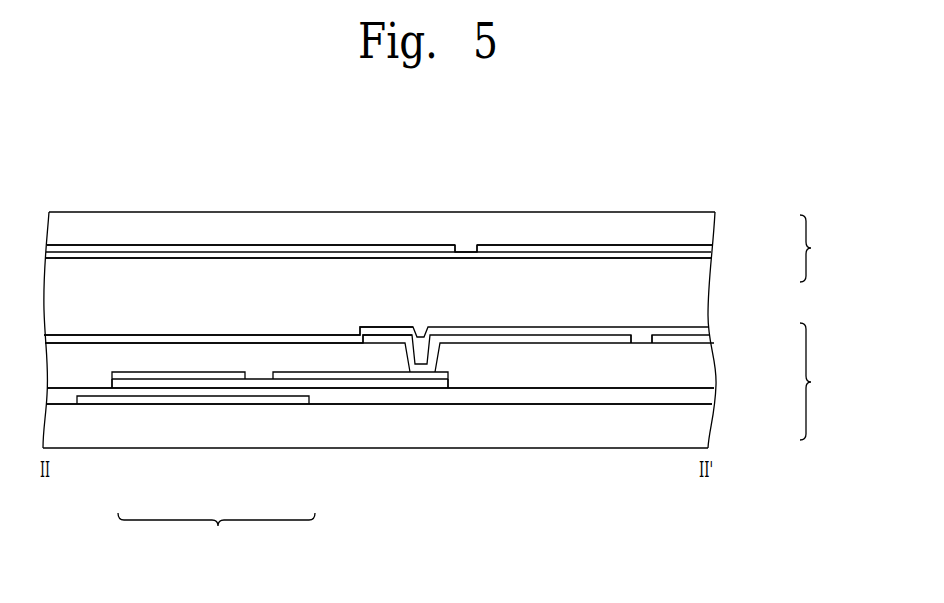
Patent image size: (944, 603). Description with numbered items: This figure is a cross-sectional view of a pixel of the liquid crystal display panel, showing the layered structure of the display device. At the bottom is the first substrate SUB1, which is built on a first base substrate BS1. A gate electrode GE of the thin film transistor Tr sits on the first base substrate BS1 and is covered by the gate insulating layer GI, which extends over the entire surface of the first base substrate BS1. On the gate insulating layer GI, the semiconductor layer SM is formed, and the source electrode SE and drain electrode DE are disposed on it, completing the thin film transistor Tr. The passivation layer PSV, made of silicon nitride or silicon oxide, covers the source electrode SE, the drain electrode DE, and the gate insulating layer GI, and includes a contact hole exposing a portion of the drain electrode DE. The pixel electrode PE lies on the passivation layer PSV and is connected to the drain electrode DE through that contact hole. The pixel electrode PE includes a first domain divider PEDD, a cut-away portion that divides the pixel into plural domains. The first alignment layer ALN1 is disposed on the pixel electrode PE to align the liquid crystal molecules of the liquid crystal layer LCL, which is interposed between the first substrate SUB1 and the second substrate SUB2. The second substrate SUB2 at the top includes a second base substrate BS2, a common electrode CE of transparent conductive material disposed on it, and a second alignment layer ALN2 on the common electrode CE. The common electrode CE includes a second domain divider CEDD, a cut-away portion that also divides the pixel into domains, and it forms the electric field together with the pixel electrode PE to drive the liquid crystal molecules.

The second base substrate BS2 is at (703, 225).
The common electrode CE is at (711, 248).
The second domain divider CEDD is at (465, 252).
The second alignment layer ALN2 is at (712, 260).
The second substrate SUB2 is at (831, 248).
The liquid crystal layer LCL is at (700, 297).
The first alignment layer ALN1 is at (708, 332).
The pixel electrode PE is at (493, 340).
The first domain divider PEDD is at (640, 337).
The passivation layer PSV is at (700, 360).
The source electrode SE is at (188, 375).
The drain electrode DE is at (303, 375).
The semiconductor layer SM is at (242, 383).
The gate insulating layer GI is at (700, 396).
The gate electrode GE is at (127, 400).
The first base substrate BS1 is at (700, 428).
The first substrate SUB1 is at (831, 381).
The thin film transistor Tr is at (216, 534).